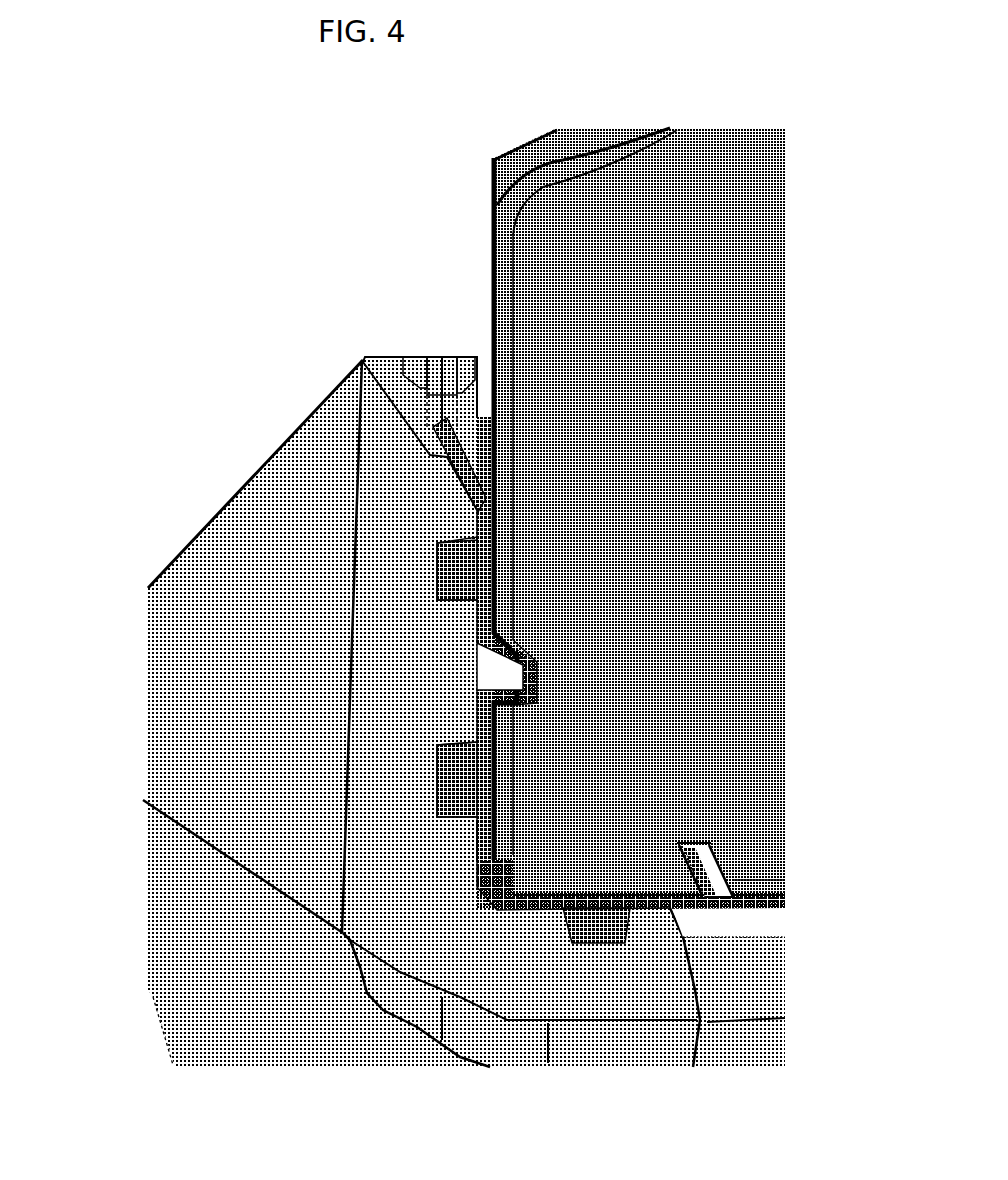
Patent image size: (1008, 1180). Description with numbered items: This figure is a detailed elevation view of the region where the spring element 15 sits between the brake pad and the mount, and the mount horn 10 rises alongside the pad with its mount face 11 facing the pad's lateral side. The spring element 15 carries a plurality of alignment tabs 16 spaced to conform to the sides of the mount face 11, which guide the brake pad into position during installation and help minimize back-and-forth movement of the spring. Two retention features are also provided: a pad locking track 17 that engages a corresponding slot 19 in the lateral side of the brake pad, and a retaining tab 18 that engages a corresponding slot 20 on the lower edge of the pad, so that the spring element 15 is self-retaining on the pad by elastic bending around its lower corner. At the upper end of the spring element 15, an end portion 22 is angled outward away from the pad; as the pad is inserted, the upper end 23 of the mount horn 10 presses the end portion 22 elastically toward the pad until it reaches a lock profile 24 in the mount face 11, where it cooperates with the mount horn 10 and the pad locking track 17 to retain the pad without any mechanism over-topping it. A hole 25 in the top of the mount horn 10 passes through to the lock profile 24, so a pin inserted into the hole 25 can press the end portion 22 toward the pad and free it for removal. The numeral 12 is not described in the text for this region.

The mount horn 10 is at (195, 547).
The mount face 11 is at (473, 717).
The vessel wall 12 is at (494, 187).
The spring element 15 is at (488, 836).
The alignment tabs 16 is at (437, 560).
The pad locking track 17 is at (533, 685).
The retaining tab 18 is at (722, 892).
The slot 19 is at (518, 697).
The slot 20 is at (693, 842).
The end portion 22 is at (468, 440).
The upper end 23 is at (470, 357).
The lock profile 24 is at (360, 388).
The hole 25 is at (432, 357).